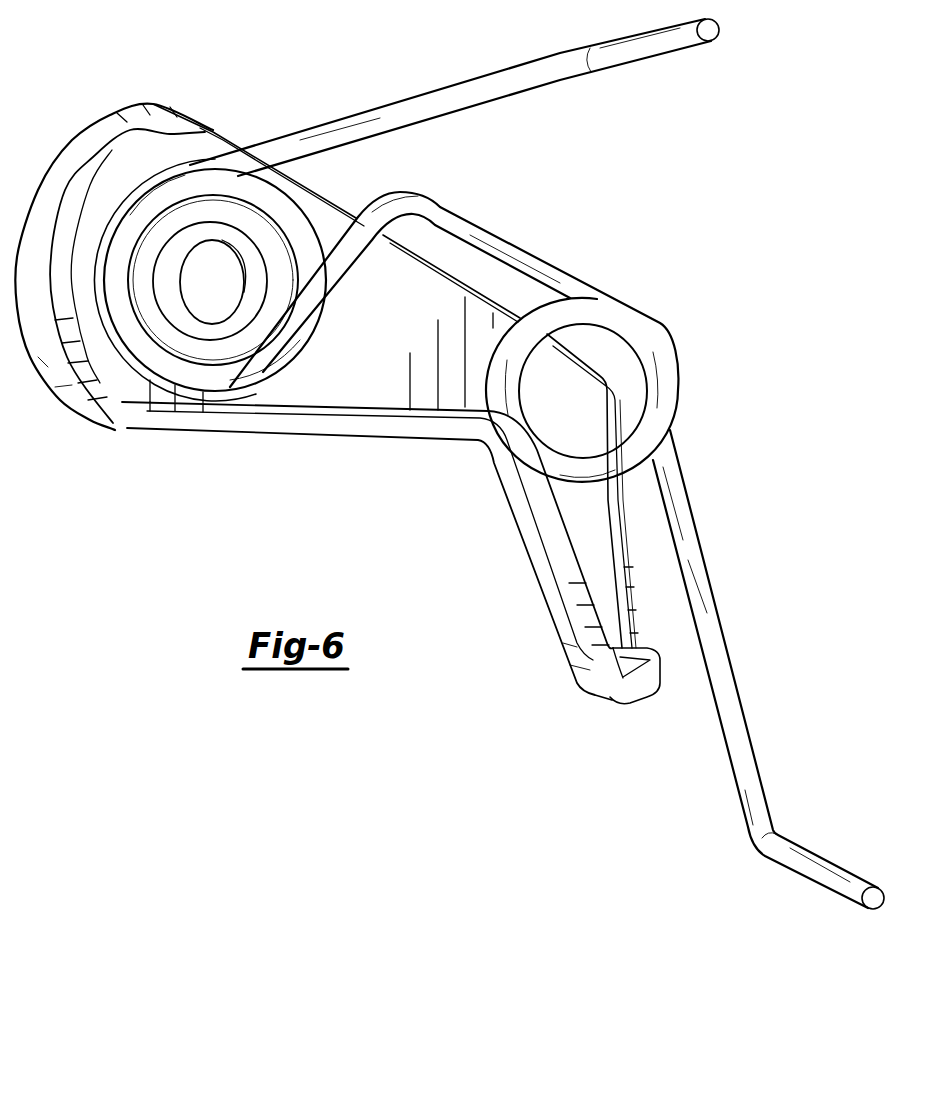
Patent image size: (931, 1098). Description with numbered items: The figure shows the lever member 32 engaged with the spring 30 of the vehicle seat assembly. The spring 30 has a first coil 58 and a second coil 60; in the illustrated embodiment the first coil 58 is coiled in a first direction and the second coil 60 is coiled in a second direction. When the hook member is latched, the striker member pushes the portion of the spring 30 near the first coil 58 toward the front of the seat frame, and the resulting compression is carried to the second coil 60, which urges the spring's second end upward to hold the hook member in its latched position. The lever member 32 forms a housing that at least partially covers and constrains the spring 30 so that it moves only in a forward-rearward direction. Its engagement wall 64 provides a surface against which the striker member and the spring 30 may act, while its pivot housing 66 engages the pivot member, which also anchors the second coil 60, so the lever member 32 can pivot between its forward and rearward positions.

The spring 30 is at (530, 255).
The first coil 58 is at (503, 390).
The pivot housing 66 is at (258, 283).
The second coil 60 is at (128, 345).
The lever member 32 is at (350, 390).
The engagement wall 64 is at (208, 424).